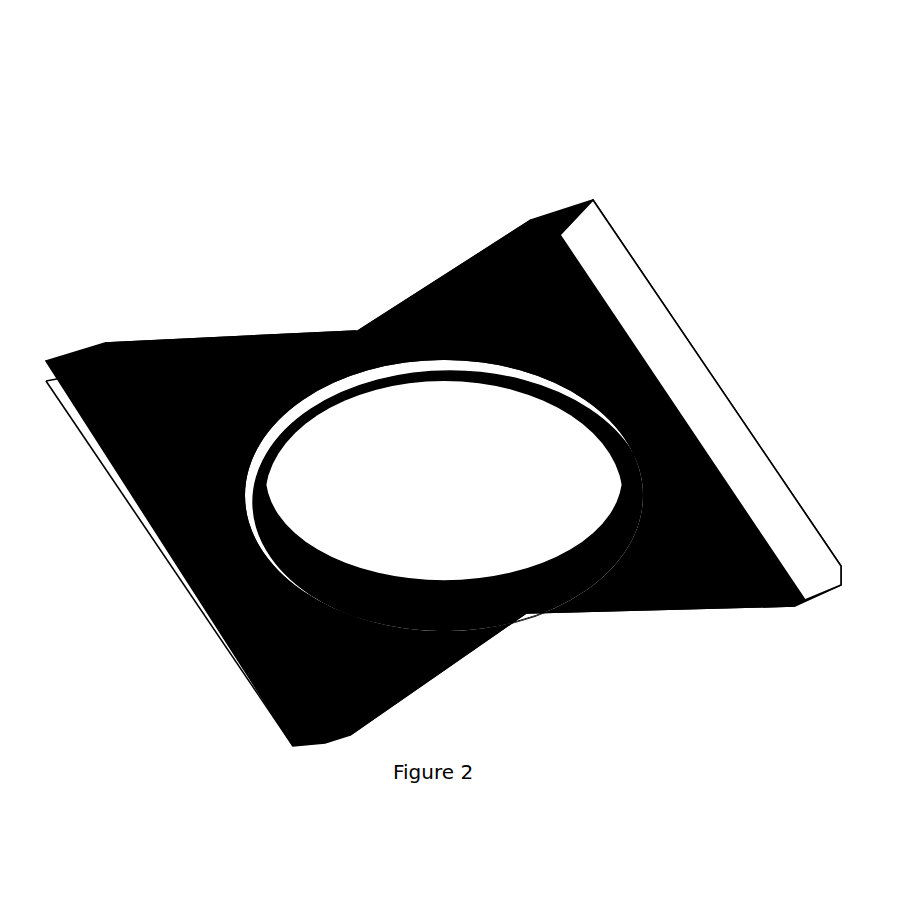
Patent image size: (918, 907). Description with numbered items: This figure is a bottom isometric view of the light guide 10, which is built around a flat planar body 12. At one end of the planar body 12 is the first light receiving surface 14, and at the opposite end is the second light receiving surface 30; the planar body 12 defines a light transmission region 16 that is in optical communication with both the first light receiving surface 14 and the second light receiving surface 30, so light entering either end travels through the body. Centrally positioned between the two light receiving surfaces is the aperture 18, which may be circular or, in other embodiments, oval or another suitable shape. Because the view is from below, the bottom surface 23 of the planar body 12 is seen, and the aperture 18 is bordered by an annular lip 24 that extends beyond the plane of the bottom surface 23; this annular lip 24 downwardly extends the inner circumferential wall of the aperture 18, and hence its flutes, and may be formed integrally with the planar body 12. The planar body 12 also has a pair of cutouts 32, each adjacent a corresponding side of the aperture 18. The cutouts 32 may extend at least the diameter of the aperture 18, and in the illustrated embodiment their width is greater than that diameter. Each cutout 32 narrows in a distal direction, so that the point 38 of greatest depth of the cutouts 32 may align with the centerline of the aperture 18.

The light guide 10 is at (140, 125).
The planar body 12 is at (142, 287).
The first light receiving surface 14 is at (143, 532).
The light transmission region 16 is at (190, 425).
The aperture 18 is at (438, 493).
The bottom surface 23 is at (470, 273).
The annular lip 24 is at (267, 565).
The second light receiving surface 30 is at (657, 303).
The cutout 32 is at (267, 323).
The point of greatest depth 38 is at (350, 323).